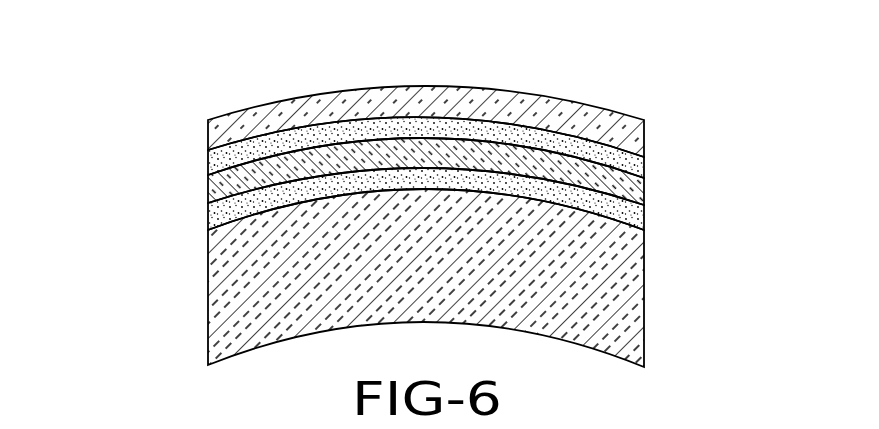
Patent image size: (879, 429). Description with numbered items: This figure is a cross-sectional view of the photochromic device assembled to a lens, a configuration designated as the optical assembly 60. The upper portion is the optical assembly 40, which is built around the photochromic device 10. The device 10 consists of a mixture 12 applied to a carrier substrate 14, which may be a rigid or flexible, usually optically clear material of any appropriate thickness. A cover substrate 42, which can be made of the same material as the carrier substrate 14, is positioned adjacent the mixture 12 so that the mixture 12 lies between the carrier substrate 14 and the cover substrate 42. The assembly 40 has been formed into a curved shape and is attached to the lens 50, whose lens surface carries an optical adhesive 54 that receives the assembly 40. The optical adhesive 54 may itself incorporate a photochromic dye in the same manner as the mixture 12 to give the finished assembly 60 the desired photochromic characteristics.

The photochromic device 10 is at (447, 184).
The mixture 12 is at (660, 160).
The carrier substrate 14 is at (660, 190).
The optical assembly 40 is at (434, 108).
The cover substrate 42 is at (660, 126).
The lens 50 is at (196, 330).
The optical adhesive 54 is at (646, 221).
The optical assembly 60 is at (383, 213).